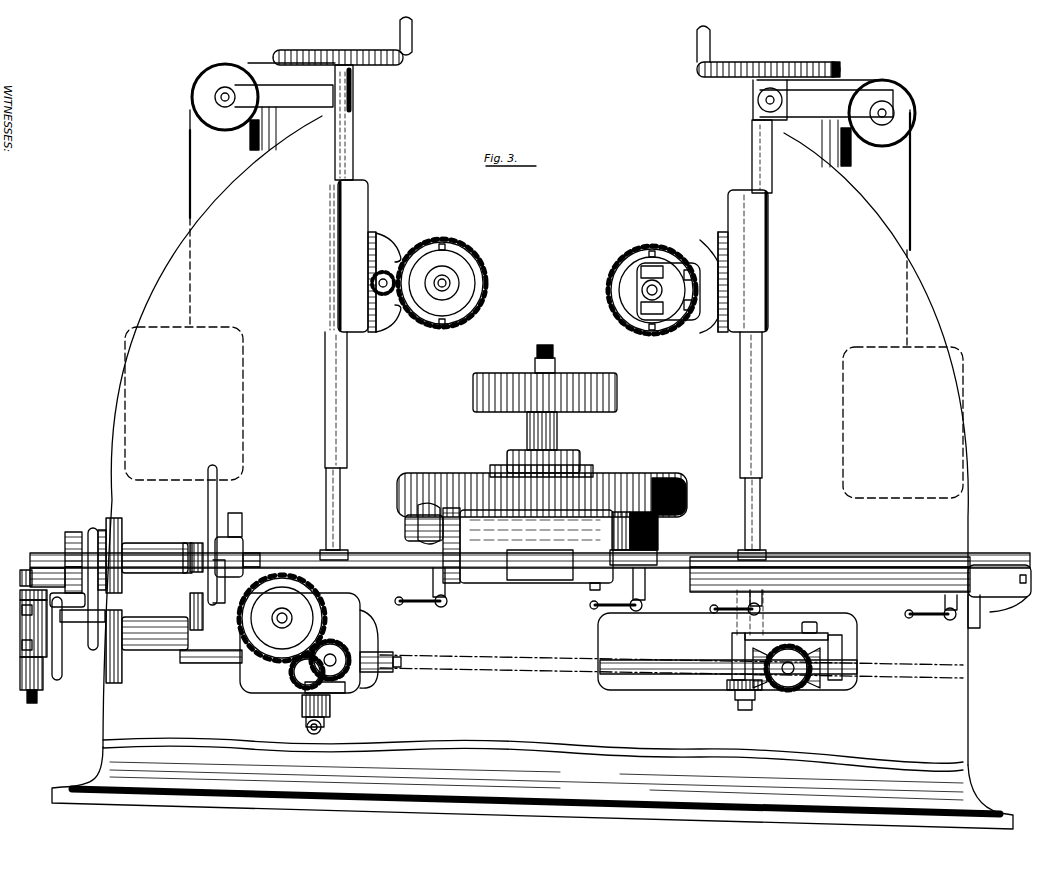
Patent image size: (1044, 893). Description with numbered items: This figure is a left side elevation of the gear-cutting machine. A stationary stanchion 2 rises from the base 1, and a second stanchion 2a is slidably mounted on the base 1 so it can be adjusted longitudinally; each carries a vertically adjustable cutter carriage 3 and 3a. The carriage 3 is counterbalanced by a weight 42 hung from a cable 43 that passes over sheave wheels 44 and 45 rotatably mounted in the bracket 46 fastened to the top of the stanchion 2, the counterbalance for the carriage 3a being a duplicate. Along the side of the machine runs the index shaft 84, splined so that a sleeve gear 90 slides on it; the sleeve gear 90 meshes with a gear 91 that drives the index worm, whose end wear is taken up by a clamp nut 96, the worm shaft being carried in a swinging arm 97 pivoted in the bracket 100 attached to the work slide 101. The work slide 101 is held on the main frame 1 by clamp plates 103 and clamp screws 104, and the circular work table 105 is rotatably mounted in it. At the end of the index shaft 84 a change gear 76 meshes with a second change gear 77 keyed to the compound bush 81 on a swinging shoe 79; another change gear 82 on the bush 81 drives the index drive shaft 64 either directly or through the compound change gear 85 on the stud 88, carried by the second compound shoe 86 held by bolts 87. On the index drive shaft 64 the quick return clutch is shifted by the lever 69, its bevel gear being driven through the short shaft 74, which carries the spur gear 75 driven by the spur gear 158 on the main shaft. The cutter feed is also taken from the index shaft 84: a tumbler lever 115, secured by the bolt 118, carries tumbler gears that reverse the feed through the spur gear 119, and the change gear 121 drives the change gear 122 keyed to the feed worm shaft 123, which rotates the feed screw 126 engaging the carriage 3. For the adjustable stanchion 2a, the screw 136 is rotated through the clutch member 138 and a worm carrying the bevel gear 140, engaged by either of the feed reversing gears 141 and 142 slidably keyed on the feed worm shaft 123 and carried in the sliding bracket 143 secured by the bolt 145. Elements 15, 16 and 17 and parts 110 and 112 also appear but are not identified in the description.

The base 1 is at (964, 718).
The stanchion 2 is at (115, 483).
The second stanchion 2a is at (965, 524).
The cutter carriage 3 is at (368, 190).
The cutter carriage 3a is at (730, 192).
The gear 15 is at (474, 268).
The gear 16 is at (452, 250).
The pinion 17 is at (388, 274).
The weight 42 is at (142, 329).
The cable 43 is at (190, 147).
The sheave wheel 44 is at (232, 68).
The sheave wheel 45 is at (332, 77).
The bracket 46 is at (278, 90).
The index drive shaft 64 is at (218, 664).
The lever 69 is at (318, 730).
The short shaft 74 is at (336, 652).
The spur gear 75 is at (310, 664).
The change gear 76 is at (78, 534).
The second change gear 77 is at (66, 572).
The swinging shoe 79 is at (90, 536).
The compound bush 81 is at (46, 570).
The change gear 82 is at (32, 568).
The index shaft 84 is at (381, 575).
The compound change gear 85 is at (40, 690).
The second compound shoe 86 is at (55, 675).
The bolts 87 is at (30, 703).
The stud 88 is at (60, 598).
The sleeve gear 90 is at (433, 580).
The gear 91 is at (420, 512).
The clamp nut 96 is at (418, 538).
The swinging arm 97 is at (592, 589).
The bracket 100 is at (533, 588).
The work slide 101 is at (657, 535).
The clamp plates 103 is at (652, 584).
The clamp screws 104 is at (650, 596).
The circular work table 105 is at (463, 597).
The gear 110 is at (575, 462).
The gear shaft 112 is at (558, 432).
The tumbler lever 115 is at (216, 496).
The bolt 118 is at (240, 520).
The spur gear 119 is at (203, 612).
The change gear 121 is at (108, 596).
The change gear 122 is at (105, 690).
The feed worm shaft 123 is at (668, 672).
The feed screw 126 is at (336, 524).
The screw 136 is at (745, 517).
The clutch member 138 is at (728, 697).
The bevel gear 140 is at (794, 690).
The feed reversing gear 141 is at (820, 690).
The feed reversing gear 142 is at (768, 685).
The sliding bracket 143 is at (843, 652).
The bolt 145 is at (818, 628).
The spur gear 158 is at (242, 628).